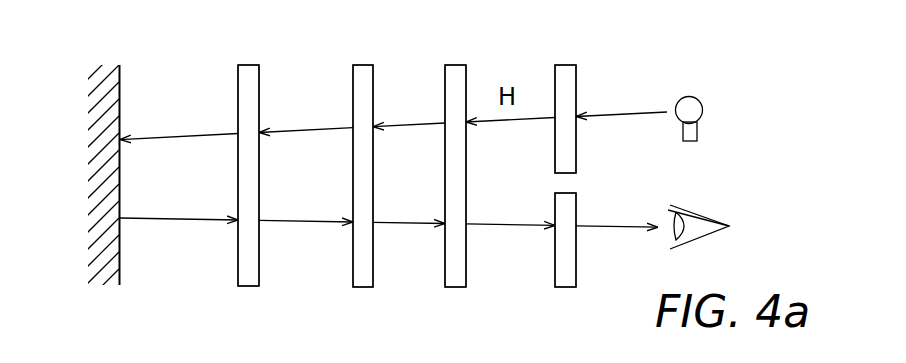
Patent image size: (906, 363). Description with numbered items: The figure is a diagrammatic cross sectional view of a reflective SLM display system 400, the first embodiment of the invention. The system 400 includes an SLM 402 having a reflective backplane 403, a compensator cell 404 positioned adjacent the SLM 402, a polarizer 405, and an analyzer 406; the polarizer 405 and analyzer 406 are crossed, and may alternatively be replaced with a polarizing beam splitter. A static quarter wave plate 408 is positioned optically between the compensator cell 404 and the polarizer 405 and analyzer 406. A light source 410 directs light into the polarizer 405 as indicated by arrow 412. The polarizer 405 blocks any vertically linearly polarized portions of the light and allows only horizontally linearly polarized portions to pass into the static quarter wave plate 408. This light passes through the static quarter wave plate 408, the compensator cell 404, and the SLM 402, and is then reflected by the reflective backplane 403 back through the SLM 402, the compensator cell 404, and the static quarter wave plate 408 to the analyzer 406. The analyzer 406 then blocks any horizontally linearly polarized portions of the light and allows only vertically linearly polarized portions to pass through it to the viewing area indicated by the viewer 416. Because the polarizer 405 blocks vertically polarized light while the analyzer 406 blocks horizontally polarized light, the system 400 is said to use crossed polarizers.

The reflective SLM display system 400 is at (374, 38).
The SLM 402 is at (252, 286).
The reflective backplane 403 is at (120, 242).
The compensator cell 404 is at (363, 287).
The polarizer 405 is at (573, 66).
The analyzer 406 is at (570, 287).
The static quarter wave plate 408 is at (462, 287).
The light source 410 is at (700, 106).
The arrow 412 is at (607, 115).
The viewer 416 is at (708, 214).